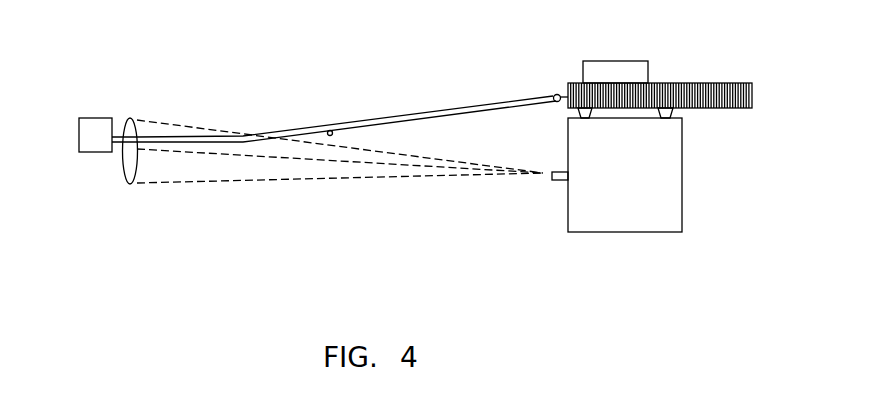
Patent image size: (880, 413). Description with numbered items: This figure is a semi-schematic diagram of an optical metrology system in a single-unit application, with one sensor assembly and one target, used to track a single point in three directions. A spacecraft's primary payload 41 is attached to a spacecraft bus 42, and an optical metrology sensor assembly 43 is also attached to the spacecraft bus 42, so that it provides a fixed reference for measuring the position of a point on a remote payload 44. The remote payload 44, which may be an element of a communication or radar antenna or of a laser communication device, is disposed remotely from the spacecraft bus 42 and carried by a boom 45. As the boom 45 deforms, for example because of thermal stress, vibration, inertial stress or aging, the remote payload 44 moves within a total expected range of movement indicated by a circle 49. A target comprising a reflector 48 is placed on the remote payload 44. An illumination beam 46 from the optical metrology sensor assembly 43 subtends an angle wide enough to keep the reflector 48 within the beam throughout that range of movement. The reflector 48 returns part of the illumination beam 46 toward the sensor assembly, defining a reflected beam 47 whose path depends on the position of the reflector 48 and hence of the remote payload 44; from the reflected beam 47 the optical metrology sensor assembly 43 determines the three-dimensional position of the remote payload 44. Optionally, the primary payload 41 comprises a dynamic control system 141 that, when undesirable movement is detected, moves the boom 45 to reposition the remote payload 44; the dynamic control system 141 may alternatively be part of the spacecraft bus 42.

The primary payload 41 is at (752, 95).
The dynamic control system 141 is at (633, 61).
The spacecraft bus 42 is at (682, 205).
The optical metrology sensor assembly 43 is at (552, 170).
The remote payload 44 is at (79, 128).
The boom 45 is at (208, 132).
The illumination beam 46 is at (390, 179).
The reflected beam 47 is at (272, 161).
The reflector 48 is at (125, 147).
The circle 49 is at (132, 118).